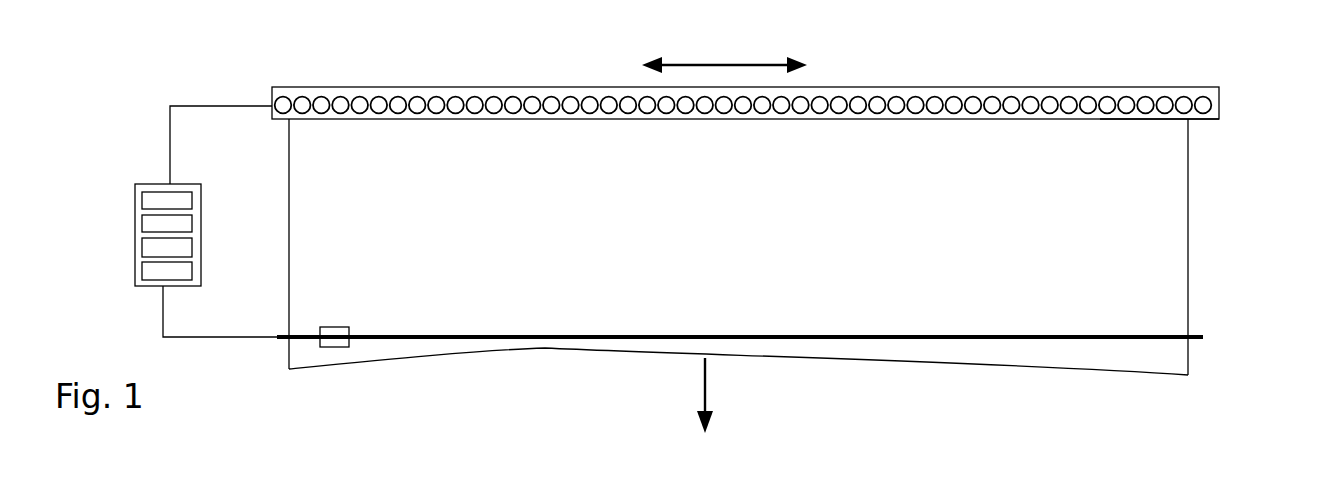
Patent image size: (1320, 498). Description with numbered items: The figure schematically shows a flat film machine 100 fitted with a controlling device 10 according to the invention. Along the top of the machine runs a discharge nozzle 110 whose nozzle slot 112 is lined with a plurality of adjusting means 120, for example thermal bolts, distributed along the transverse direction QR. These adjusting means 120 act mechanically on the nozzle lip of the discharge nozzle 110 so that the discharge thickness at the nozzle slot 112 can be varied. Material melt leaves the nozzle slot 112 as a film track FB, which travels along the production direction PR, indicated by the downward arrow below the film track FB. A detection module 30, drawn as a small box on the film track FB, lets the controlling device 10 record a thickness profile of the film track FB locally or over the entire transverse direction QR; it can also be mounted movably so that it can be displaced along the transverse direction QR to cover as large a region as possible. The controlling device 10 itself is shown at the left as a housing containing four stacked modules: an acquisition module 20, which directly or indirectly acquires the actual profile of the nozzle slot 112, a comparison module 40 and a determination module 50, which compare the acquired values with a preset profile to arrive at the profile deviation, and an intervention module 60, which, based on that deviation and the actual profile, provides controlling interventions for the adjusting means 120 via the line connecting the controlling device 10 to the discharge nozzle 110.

The flat film machine 100 is at (204, 74).
The controlling device 10 is at (142, 187).
The acquisition module 20 is at (184, 268).
The detection module 30 is at (331, 342).
The comparison module 40 is at (186, 247).
The determination module 50 is at (188, 220).
The intervention module 60 is at (182, 197).
The discharge nozzle 110 is at (1219, 118).
The nozzle slot 112 is at (1189, 120).
The adjusting means 120 is at (1185, 98).
The film track FB is at (1170, 289).
The transverse direction QR is at (724, 55).
The production direction PR is at (720, 395).